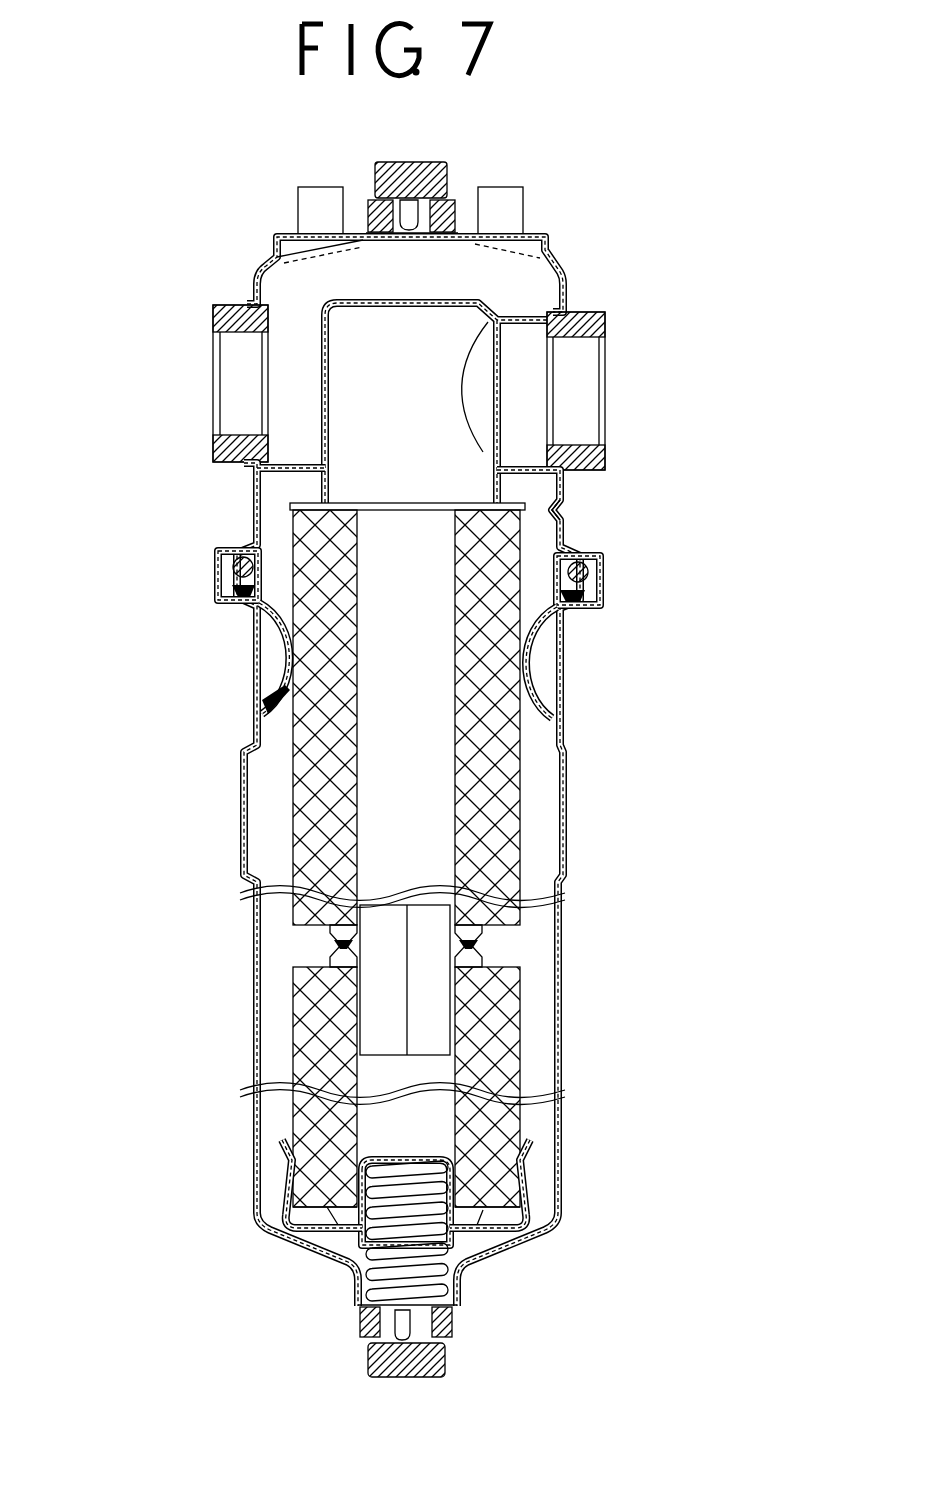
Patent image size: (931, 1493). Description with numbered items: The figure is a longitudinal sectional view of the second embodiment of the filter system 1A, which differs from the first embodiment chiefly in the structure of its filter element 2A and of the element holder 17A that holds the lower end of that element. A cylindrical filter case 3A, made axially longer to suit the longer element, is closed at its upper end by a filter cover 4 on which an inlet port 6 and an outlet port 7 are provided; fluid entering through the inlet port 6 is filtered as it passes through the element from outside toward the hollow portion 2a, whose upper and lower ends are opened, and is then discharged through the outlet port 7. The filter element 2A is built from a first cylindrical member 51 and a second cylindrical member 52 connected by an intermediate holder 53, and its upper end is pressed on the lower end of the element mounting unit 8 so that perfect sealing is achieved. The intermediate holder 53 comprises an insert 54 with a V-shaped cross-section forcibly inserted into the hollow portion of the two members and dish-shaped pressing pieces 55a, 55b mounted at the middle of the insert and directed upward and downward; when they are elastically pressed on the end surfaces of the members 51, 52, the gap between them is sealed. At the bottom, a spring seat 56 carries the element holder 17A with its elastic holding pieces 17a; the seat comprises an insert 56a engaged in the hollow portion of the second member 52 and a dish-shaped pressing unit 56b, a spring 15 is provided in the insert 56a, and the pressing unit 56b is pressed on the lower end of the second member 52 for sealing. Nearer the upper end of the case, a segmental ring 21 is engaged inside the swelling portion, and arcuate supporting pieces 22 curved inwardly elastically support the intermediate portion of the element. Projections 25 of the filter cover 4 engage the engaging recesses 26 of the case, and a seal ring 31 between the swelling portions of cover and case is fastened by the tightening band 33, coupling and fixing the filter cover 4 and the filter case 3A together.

The filter system 1A is at (415, 769).
The filter element 2A is at (525, 858).
The hollow portion 2a is at (426, 721).
The filter case 3A is at (615, 788).
The filter cover 4 is at (578, 270).
The inlet port 6 is at (233, 372).
The outlet port 7 is at (583, 370).
The element mounting unit 8 is at (327, 303).
The spring 15 is at (362, 1281).
The elastic holding pieces 17a is at (285, 1160).
The element holder 17A is at (250, 1224).
The segmental ring 21 is at (218, 592).
The supporting pieces 22 is at (290, 670).
The projections 25 is at (562, 512).
The engaging recesses 26 is at (556, 510).
The seal ring 31 is at (218, 565).
The tightening band 33 is at (605, 580).
The first cylindrical member 51 is at (508, 858).
The second cylindrical member 52 is at (497, 997).
The intermediate holder 53 is at (265, 971).
The insert 54 is at (373, 995).
The pressing piece 55a is at (338, 944).
The pressing piece 55b is at (340, 950).
The spring seat 56 is at (537, 1136).
The insert 56a is at (413, 1160).
The pressing unit 56b is at (478, 1200).